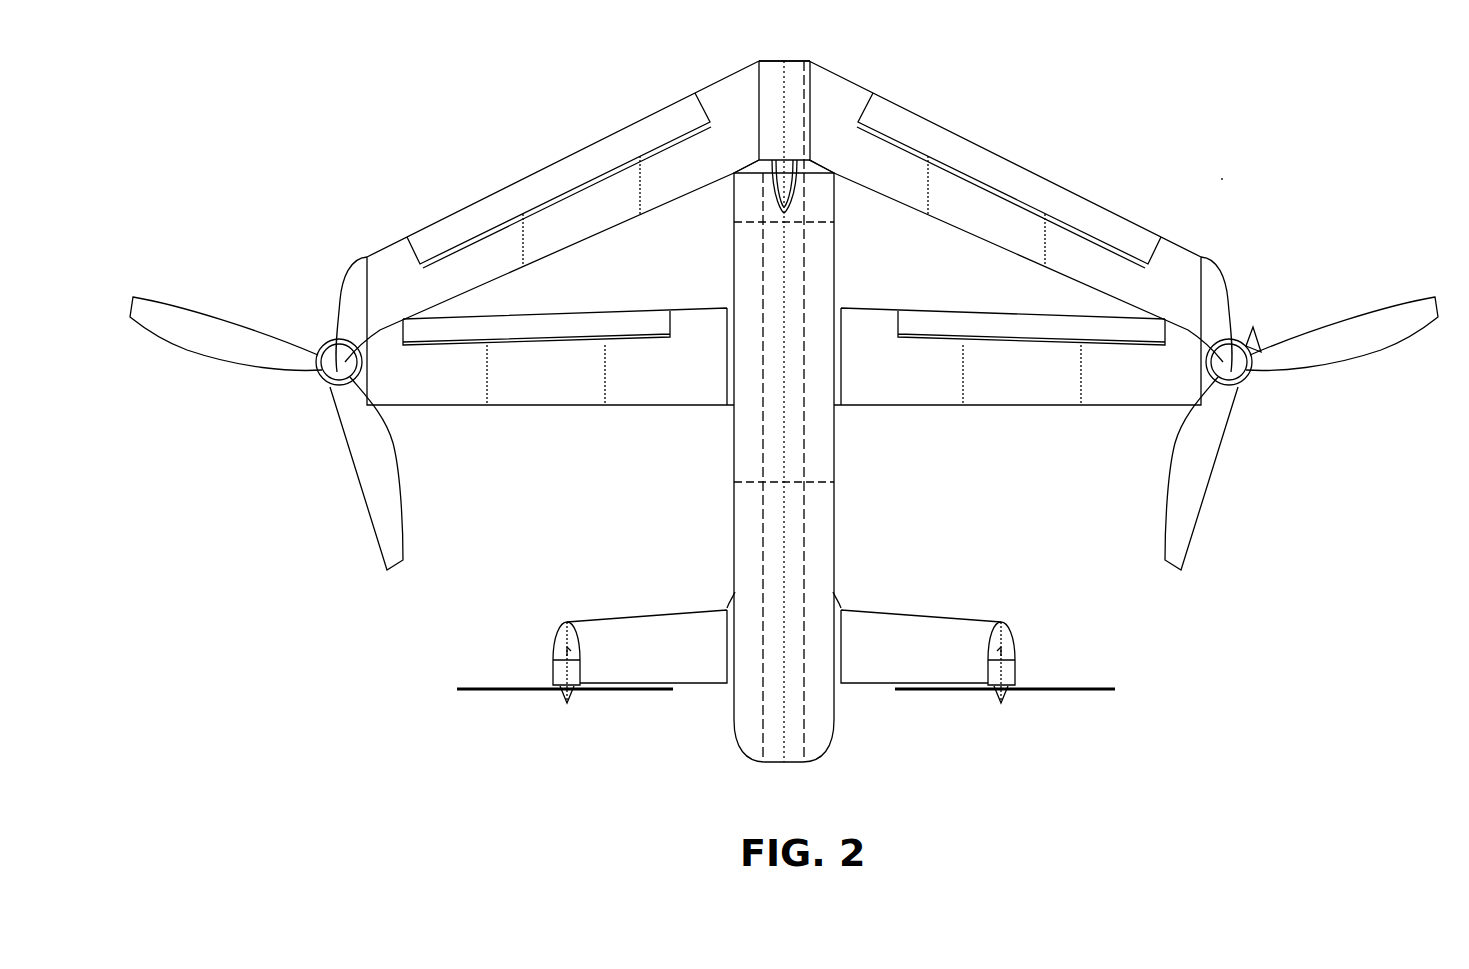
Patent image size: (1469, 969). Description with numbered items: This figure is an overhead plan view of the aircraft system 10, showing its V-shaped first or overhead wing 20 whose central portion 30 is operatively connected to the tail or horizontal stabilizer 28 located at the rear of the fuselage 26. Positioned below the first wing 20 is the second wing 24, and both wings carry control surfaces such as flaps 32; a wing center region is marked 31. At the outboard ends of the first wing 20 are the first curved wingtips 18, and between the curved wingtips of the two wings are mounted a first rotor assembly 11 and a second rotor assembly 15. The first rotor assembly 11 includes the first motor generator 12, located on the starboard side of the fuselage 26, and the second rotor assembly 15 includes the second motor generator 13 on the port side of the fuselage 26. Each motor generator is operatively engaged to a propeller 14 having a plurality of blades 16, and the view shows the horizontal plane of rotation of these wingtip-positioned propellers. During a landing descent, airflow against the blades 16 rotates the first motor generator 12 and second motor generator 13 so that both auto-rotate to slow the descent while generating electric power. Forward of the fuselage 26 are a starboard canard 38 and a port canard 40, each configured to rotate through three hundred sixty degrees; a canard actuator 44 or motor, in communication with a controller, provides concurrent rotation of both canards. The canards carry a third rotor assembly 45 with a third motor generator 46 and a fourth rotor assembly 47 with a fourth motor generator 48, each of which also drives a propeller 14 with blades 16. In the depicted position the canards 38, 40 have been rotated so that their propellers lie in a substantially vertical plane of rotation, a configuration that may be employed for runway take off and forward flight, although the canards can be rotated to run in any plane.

The aircraft system 10 is at (1225, 175).
The first rotor assembly 11 is at (300, 323).
The first motor generator 12 is at (325, 387).
The second motor generator 13 is at (1253, 332).
The propeller 14 is at (562, 680).
The second rotor assembly 15 is at (1274, 313).
The blades 16 is at (373, 480).
The first curved wingtips 18 is at (353, 300).
The first wing 20 is at (400, 273).
The second wing 24 is at (570, 380).
The fuselage 26 is at (772, 463).
The horizontal stabilizer 28 is at (782, 183).
The central portion 30 is at (786, 102).
The wing center section 31 is at (630, 276).
The flaps 32 is at (593, 157).
The starboard canard 38 is at (665, 637).
The port canard 40 is at (920, 640).
The canard actuator 44 is at (727, 663).
The third rotor assembly 45 is at (540, 655).
The third motor generator 46 is at (567, 650).
The fourth rotor assembly 47 is at (1035, 662).
The fourth motor generator 48 is at (1012, 645).